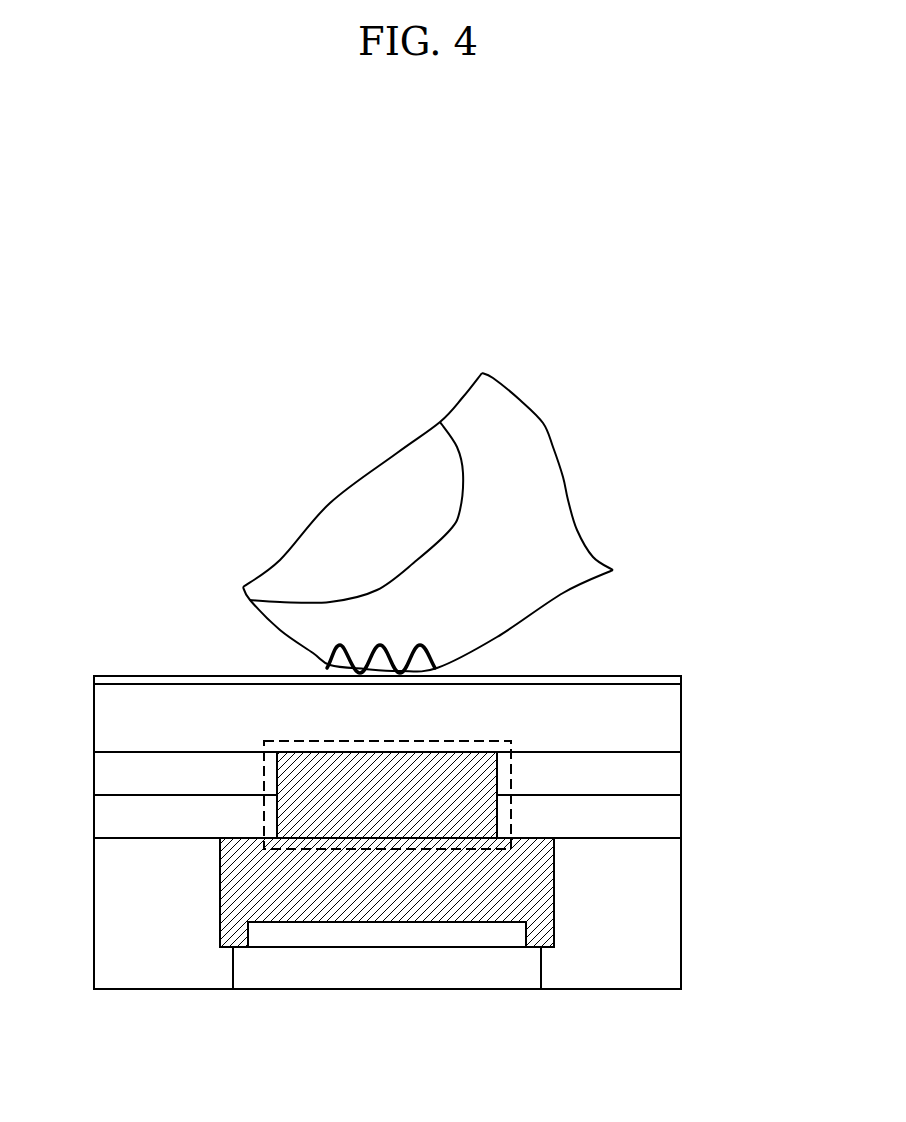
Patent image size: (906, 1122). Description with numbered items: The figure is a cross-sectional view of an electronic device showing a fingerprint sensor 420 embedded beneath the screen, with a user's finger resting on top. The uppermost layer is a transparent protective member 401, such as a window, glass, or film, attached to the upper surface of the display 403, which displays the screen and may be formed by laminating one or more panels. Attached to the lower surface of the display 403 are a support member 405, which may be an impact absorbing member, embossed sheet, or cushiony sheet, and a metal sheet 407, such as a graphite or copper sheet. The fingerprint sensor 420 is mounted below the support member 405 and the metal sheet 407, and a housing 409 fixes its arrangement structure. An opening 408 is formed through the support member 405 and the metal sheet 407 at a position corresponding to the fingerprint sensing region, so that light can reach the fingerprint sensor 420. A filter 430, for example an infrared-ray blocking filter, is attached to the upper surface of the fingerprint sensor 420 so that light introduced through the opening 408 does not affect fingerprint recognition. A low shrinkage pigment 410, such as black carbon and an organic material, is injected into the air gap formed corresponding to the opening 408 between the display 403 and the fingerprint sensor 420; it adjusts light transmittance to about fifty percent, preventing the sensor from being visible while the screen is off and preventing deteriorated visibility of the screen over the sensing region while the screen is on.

The transparent protective member 401 is at (681, 683).
The display 403 is at (681, 723).
The support member 405 is at (681, 776).
The metal sheet 407 is at (681, 822).
The opening 408 is at (263, 784).
The housing 409 is at (681, 911).
The low shrinkage pigment 410 is at (247, 883).
The fingerprint sensor 420 is at (424, 989).
The filter 430 is at (332, 932).